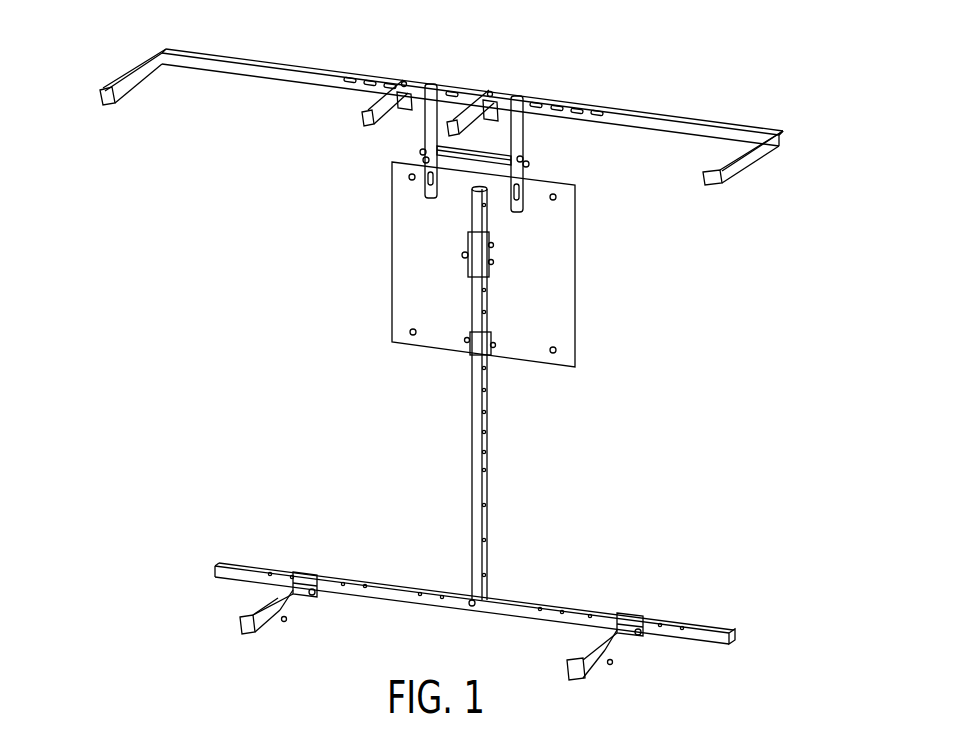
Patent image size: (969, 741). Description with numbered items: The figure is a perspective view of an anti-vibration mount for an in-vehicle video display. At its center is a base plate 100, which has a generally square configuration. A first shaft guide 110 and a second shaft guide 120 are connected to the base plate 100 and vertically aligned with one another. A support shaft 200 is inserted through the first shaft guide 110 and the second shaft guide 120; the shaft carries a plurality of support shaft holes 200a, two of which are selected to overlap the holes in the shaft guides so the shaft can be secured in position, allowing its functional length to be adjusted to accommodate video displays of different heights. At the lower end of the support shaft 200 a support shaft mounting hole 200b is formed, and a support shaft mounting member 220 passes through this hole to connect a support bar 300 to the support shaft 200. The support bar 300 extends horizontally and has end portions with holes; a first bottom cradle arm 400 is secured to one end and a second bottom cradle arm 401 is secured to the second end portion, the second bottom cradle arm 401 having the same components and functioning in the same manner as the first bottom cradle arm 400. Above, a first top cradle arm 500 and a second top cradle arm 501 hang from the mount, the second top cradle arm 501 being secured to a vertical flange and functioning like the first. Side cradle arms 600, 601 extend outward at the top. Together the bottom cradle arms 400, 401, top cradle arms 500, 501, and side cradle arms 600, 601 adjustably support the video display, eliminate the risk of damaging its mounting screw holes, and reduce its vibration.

The base plate 100 is at (576, 273).
The first shaft guide 110 is at (490, 238).
The second shaft guide 120 is at (470, 347).
The support shaft 200 is at (456, 394).
The support shaft holes 200a is at (487, 430).
The support shaft mounting hole 200b is at (463, 578).
The support shaft mounting member 220 is at (471, 607).
The support bar 300 is at (540, 590).
The first bottom cradle arm 400 is at (625, 675).
The second bottom cradle arm 401 is at (224, 630).
The first top cradle arm 500 is at (474, 84).
The second top cradle arm 501 is at (363, 97).
The side cradle arm 600 is at (800, 131).
The side cradle arm 601 is at (133, 58).